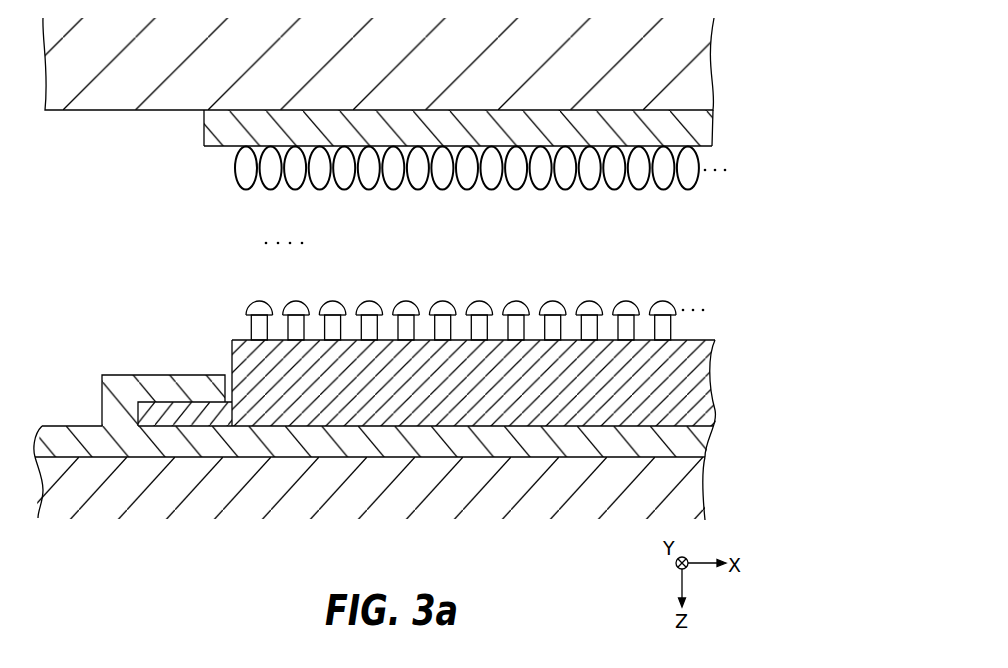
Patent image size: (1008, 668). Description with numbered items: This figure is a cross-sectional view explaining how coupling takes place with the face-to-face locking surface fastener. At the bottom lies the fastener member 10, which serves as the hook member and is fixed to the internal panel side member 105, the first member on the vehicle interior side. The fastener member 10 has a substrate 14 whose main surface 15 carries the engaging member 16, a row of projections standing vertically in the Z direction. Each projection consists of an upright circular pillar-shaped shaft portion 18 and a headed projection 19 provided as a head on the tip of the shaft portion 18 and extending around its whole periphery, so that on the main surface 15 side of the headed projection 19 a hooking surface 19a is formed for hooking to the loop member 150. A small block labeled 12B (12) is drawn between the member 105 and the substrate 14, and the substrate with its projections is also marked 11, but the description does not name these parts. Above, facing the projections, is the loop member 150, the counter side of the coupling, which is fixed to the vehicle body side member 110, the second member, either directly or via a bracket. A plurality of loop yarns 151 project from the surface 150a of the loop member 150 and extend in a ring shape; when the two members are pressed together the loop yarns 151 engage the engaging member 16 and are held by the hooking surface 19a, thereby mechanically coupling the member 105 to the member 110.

The vehicle body side member 110 is at (103, 75).
The loop member 150 is at (678, 132).
The surface of the loop member 150a is at (706, 150).
The loop yarns 151 is at (665, 189).
The fastener member 10 is at (531, 440).
The internal panel side member 105 is at (85, 483).
The electrode 12B is at (157, 409).
The electrode layer 12 is at (184, 363).
The semiconductor structure 11 is at (469, 337).
The substrate 14 is at (235, 333).
The main surface 15 is at (698, 340).
The engaging member 16 is at (475, 278).
The shaft portion 18 is at (517, 330).
The headed projection 19 is at (513, 302).
The hooking surface 19a is at (498, 327).